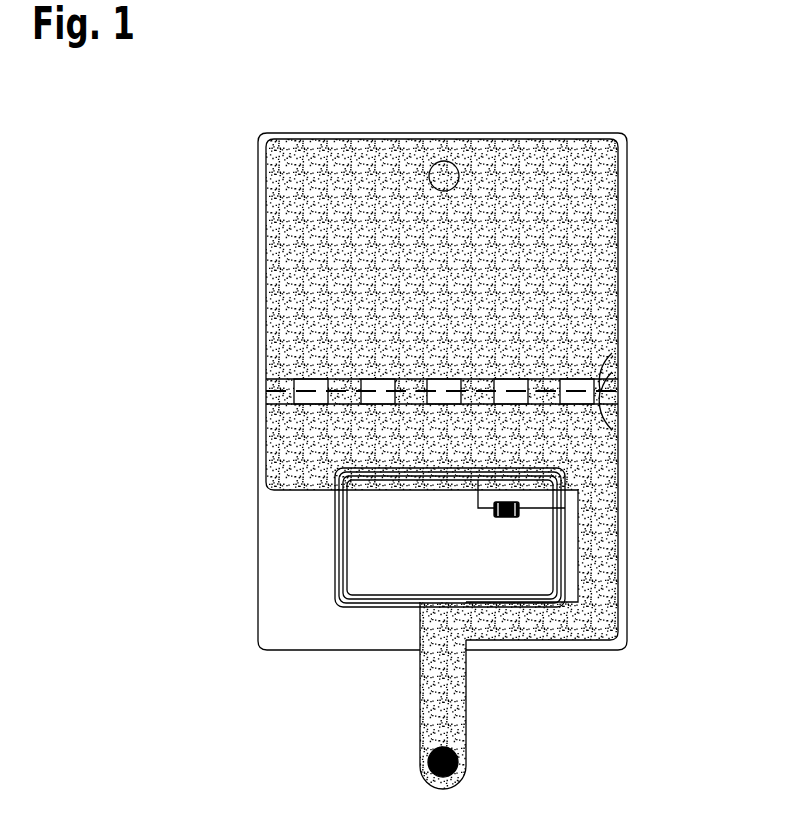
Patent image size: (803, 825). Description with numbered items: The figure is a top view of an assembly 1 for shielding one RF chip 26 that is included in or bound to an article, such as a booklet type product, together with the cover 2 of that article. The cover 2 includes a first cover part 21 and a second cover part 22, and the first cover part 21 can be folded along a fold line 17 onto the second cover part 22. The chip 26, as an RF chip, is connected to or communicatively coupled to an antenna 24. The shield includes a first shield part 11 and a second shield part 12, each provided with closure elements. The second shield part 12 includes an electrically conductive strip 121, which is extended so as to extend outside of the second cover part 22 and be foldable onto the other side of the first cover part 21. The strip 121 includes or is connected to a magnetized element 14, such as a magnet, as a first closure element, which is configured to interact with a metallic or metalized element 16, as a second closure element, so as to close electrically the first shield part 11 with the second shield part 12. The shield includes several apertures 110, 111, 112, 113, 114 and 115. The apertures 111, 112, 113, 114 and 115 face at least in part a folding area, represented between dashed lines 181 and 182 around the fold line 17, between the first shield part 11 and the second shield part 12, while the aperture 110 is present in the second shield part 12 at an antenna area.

The assembly 1 is at (283, 175).
The cover 2 is at (257, 645).
The first shield part 11 is at (287, 312).
The second shield part 12 is at (593, 465).
The magnetized element 14 is at (460, 758).
The metallic element 16 is at (448, 162).
The fold line 17 is at (601, 391).
The first cover part 21 is at (625, 170).
The second cover part 22 is at (623, 612).
The antenna 24 is at (388, 607).
The RF chip 26 is at (493, 511).
The aperture 110 is at (302, 519).
The aperture 111 is at (307, 393).
The aperture 112 is at (372, 394).
The aperture 113 is at (436, 398).
The aperture 114 is at (513, 379).
The aperture 115 is at (562, 379).
The strip 121 is at (447, 703).
The dashed line 181 is at (612, 355).
The dashed line 182 is at (612, 425).